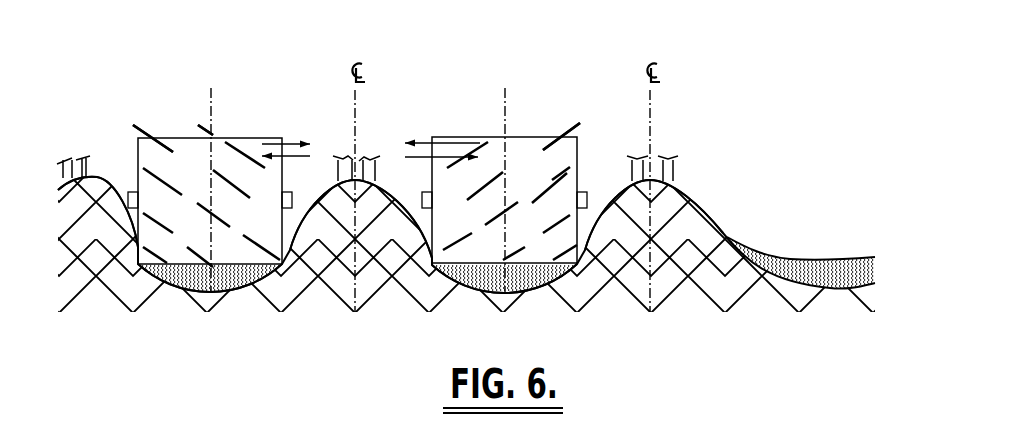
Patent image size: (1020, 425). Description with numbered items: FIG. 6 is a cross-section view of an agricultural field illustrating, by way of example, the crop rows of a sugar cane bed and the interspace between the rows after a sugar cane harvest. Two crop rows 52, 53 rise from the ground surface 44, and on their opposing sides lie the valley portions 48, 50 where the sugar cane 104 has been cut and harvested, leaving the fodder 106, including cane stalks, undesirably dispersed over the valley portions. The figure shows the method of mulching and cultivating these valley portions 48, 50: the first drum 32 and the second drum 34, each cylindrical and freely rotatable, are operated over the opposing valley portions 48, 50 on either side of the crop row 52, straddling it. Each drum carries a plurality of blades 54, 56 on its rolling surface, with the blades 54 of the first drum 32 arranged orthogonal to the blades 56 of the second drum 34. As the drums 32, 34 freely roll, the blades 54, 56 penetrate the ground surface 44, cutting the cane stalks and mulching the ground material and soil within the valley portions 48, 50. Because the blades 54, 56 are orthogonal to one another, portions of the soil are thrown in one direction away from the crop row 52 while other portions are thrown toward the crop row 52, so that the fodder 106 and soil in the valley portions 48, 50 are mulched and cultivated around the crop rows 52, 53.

The first drum 32 is at (243, 120).
The second drum 34 is at (553, 122).
The ground surface 44 is at (800, 273).
The valley portion 48 is at (847, 243).
The valley portion 50 is at (528, 270).
The crop row 52 is at (388, 170).
The crop row 53 is at (98, 192).
The blades 54 is at (213, 137).
The blades 56 is at (480, 150).
The sugar cane 104 is at (340, 160).
The fodder 106 is at (242, 270).